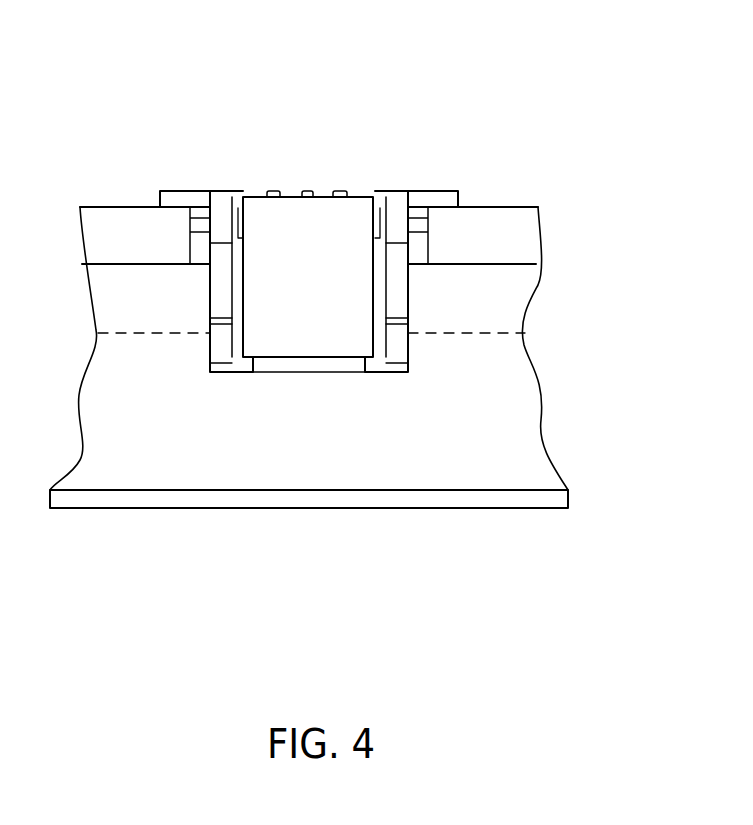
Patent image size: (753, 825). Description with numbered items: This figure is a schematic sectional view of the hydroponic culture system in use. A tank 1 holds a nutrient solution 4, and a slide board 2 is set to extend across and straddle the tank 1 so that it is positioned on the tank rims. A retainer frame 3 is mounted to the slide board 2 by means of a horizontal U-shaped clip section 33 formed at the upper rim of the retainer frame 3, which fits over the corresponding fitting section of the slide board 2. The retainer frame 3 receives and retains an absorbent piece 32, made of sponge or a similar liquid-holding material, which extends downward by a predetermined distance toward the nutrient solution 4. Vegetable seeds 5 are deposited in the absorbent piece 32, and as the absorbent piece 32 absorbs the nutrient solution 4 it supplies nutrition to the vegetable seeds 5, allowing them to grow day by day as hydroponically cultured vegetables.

The tank 1 is at (347, 508).
The slide board 2 is at (492, 208).
The retainer frame 3 is at (215, 189).
The nutrient solution 4 is at (458, 478).
The vegetable seeds 5 is at (341, 191).
The absorbent piece 32 is at (318, 203).
The clip section 33 is at (189, 203).